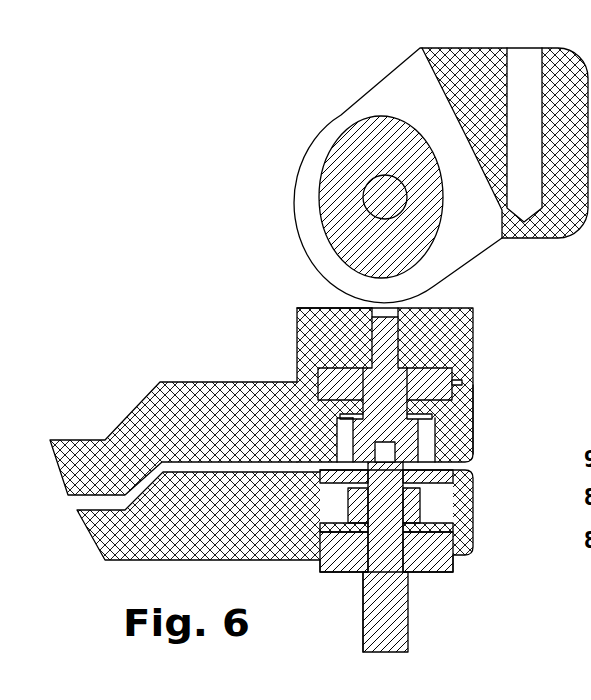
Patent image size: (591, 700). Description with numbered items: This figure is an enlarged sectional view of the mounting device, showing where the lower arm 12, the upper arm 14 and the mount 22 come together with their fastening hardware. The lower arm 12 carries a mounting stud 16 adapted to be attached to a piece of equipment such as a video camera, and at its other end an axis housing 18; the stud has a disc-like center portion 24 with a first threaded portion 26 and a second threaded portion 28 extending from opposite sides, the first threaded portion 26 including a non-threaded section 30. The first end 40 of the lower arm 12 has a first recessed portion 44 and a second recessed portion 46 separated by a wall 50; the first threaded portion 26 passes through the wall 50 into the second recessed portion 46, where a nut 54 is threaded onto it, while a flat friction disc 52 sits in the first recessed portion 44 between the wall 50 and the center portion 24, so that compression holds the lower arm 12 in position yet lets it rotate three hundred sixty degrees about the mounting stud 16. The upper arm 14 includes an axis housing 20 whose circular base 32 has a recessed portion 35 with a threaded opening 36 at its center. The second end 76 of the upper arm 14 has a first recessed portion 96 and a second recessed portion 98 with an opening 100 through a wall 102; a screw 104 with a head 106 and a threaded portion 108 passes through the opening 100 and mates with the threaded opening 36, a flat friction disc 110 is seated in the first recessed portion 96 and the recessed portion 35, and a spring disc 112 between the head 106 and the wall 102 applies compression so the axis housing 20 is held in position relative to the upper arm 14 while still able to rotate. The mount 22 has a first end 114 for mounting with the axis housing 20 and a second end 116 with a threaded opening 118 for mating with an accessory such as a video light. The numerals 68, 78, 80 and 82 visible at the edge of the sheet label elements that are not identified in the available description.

The lower arm 12 is at (106, 562).
The upper arm 14 is at (118, 434).
The mounting stud 16 is at (408, 647).
The axis housing 18 is at (238, 689).
The axis housing 20 is at (297, 308).
The mount 22 is at (562, 53).
The center portion 24 is at (438, 572).
The first threaded portion 26 is at (425, 530).
The second threaded portion 28 is at (363, 637).
The non-threaded section 30 is at (400, 556).
The circular base 32 is at (305, 325).
The recessed portion 35 is at (320, 365).
The threaded opening 36 is at (425, 314).
The first end 40 is at (475, 472).
The first recessed portion 44 is at (320, 548).
The second recessed portion 46 is at (352, 458).
The wall 50 is at (292, 562).
The friction disc 52 is at (357, 562).
The nut 54 is at (420, 505).
The adjacent figure element 68 is at (580, 689).
The second end 76 is at (475, 422).
The adjacent figure element 78 is at (579, 662).
The adjacent figure element 80 is at (580, 625).
The adjacent figure element 82 is at (581, 592).
The first recessed portion 96 is at (462, 382).
The second recessed portion 98 is at (430, 447).
The opening 100 is at (362, 408).
The wall 102 is at (442, 413).
The screw 104 is at (350, 432).
The head 106 is at (362, 418).
The threaded portion 108 is at (397, 343).
The friction disc 110 is at (467, 343).
The spring disc 112 is at (458, 388).
The first end 114 is at (347, 97).
The second end 116 is at (447, 50).
The threaded opening 118 is at (538, 80).